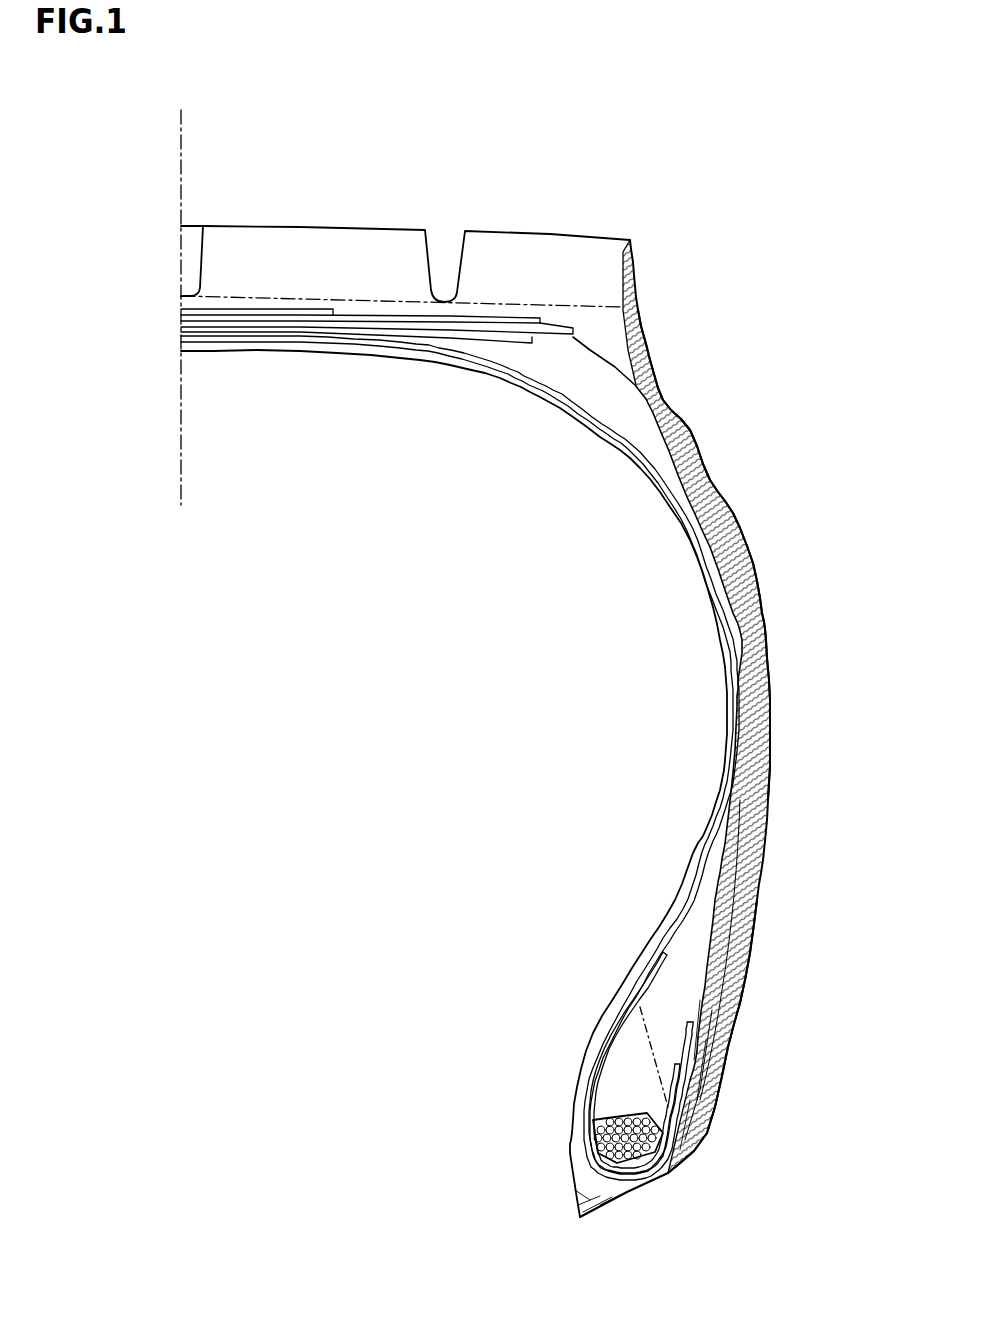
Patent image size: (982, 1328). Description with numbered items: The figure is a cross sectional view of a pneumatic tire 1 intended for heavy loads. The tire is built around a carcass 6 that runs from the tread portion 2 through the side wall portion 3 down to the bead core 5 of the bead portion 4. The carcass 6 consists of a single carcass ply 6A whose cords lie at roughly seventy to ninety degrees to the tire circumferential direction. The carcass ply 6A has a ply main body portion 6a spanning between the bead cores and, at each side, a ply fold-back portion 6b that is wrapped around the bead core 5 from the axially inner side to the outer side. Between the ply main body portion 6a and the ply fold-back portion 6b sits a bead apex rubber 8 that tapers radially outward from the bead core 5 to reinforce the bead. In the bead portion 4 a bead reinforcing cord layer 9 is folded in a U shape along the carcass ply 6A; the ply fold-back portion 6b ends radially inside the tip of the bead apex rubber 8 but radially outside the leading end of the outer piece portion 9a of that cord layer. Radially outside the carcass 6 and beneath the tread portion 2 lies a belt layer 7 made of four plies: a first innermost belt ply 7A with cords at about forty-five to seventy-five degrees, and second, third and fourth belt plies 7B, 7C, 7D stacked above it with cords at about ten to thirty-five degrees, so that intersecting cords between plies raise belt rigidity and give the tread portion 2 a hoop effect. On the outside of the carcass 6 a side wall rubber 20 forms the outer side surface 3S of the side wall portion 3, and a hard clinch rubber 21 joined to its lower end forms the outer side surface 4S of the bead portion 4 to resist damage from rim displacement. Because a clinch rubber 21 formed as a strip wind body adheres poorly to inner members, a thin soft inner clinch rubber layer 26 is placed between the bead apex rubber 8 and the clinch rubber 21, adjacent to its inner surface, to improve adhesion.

The pneumatic tire 1 is at (669, 293).
The tread portion 2 is at (330, 237).
The side wall portion 3 is at (730, 468).
The outer side surface of the side wall portion 3S is at (747, 552).
The bead portion 4 is at (544, 1150).
The outer side surface of the bead portion 4S is at (730, 1047).
The bead core 5 is at (633, 1147).
The carcass 6 is at (460, 758).
The carcass ply 6A is at (460, 758).
The ply main body portion 6a is at (703, 870).
The ply fold-back portion 6b is at (648, 1003).
The belt layer 7 is at (315, 336).
The first innermost belt ply 7A is at (314, 363).
The second belt ply 7B is at (181, 323).
The third belt ply 7C is at (181, 317).
The fourth belt ply 7D is at (181, 312).
The bead apex rubber 8 is at (660, 1042).
The bead reinforcing cord layer 9 is at (750, 1094).
The outer piece portion 9a is at (713, 1127).
The side wall rubber 20 is at (760, 582).
The clinch rubber 21 is at (750, 945).
The inner clinch rubber layer 26 is at (727, 1080).